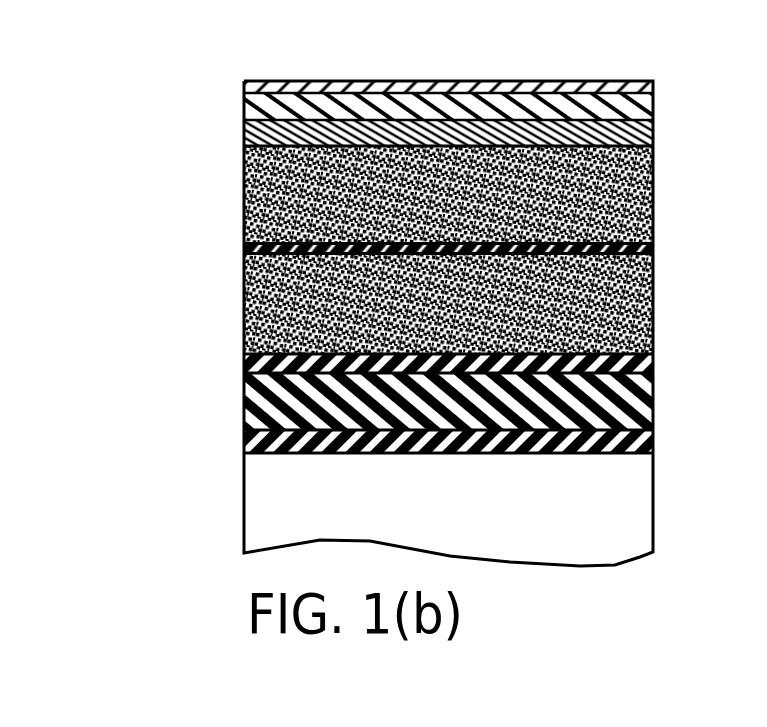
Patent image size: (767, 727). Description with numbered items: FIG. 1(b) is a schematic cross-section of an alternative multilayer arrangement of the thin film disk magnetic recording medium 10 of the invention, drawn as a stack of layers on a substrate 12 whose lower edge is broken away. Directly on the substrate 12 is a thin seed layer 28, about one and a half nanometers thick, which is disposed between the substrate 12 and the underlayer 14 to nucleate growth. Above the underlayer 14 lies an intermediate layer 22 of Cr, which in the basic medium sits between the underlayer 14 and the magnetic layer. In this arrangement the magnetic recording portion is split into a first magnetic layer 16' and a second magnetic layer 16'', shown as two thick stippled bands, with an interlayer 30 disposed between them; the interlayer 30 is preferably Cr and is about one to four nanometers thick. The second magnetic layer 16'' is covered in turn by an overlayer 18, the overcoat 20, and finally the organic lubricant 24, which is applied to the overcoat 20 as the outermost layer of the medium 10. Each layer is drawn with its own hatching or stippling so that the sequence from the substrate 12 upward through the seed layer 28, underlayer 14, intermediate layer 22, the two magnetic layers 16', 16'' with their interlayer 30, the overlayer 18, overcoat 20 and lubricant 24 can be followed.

The magnetic recording medium 10 is at (499, 292).
The substrate 12 is at (656, 485).
The underlayer 14 is at (656, 400).
The first magnetic layer 16' is at (503, 304).
The second magnetic layer 16'' is at (505, 194).
The overlayer 18 is at (655, 135).
The overcoat 20 is at (655, 106).
The intermediate layer 22 is at (656, 363).
The organic lubricant 24 is at (655, 83).
The seed layer 28 is at (656, 437).
The interlayer 30 is at (656, 247).